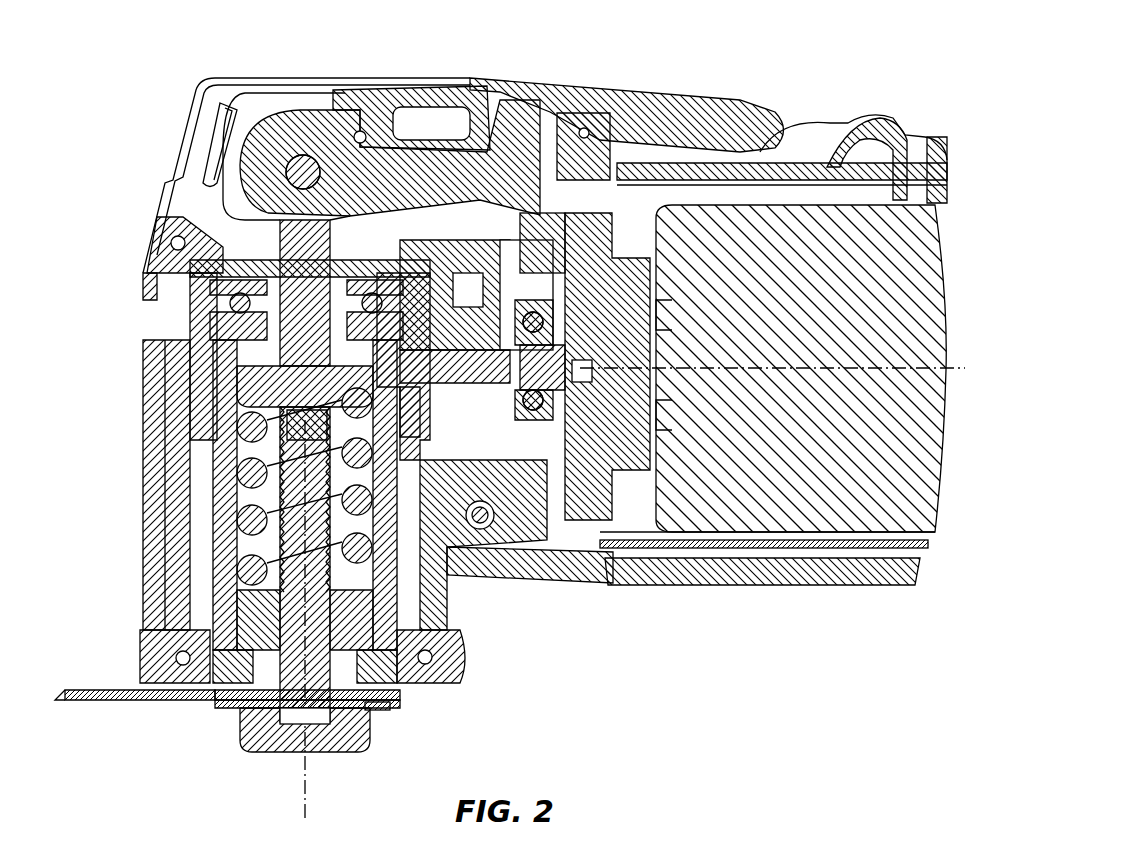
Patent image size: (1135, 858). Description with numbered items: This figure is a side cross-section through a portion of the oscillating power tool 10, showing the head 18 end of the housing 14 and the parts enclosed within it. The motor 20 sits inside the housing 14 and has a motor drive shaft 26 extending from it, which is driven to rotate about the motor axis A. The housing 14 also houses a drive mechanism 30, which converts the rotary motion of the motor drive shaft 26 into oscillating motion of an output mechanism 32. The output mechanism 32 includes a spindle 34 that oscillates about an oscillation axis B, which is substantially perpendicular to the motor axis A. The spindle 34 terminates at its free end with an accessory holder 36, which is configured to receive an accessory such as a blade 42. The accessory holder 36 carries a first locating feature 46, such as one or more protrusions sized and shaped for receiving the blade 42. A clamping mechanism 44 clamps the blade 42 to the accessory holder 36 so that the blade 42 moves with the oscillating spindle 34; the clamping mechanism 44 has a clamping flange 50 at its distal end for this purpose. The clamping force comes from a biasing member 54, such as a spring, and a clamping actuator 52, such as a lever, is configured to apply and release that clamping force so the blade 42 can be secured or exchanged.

The power tool 10 is at (112, 120).
The housing 14 is at (765, 585).
The head 18 is at (365, 80).
The motor 20 is at (782, 248).
The motor drive shaft 26 is at (590, 355).
The drive mechanism 30 is at (535, 290).
The output mechanism 32 is at (200, 694).
The spindle 34 is at (215, 470).
The accessory holder 36 is at (395, 698).
The blade 42 is at (110, 690).
The clamping mechanism 44 is at (240, 742).
The first locating feature 46 is at (390, 712).
The clamping flange 50 is at (365, 730).
The clamping actuator 52 is at (690, 95).
The biasing member 54 is at (235, 410).
The motor axis A is at (932, 368).
The oscillation axis B is at (305, 790).